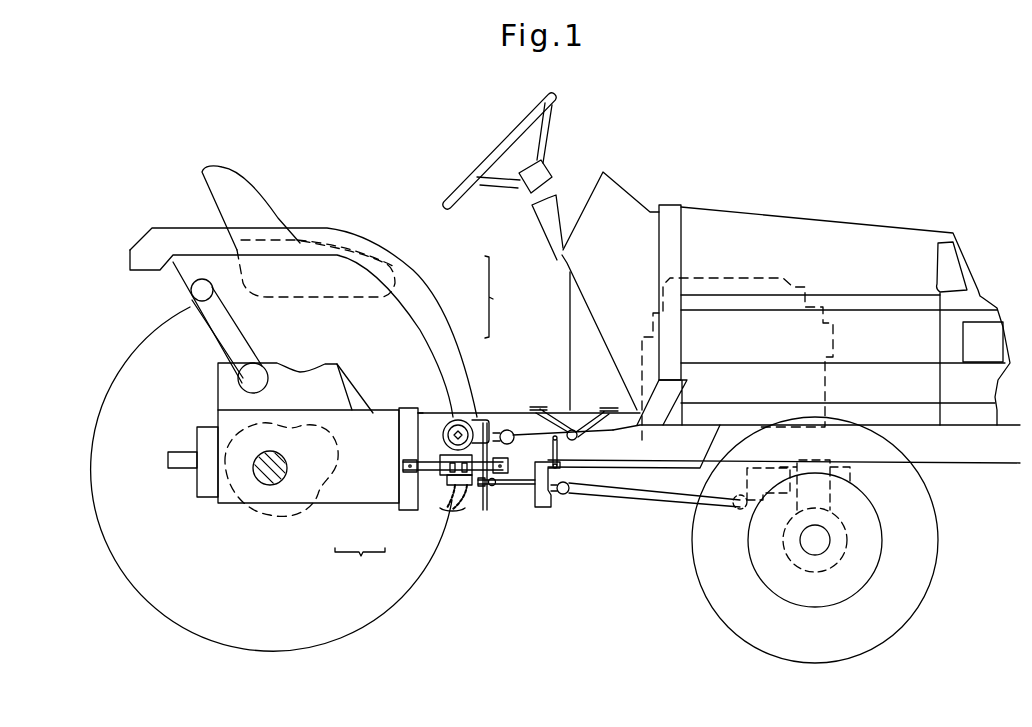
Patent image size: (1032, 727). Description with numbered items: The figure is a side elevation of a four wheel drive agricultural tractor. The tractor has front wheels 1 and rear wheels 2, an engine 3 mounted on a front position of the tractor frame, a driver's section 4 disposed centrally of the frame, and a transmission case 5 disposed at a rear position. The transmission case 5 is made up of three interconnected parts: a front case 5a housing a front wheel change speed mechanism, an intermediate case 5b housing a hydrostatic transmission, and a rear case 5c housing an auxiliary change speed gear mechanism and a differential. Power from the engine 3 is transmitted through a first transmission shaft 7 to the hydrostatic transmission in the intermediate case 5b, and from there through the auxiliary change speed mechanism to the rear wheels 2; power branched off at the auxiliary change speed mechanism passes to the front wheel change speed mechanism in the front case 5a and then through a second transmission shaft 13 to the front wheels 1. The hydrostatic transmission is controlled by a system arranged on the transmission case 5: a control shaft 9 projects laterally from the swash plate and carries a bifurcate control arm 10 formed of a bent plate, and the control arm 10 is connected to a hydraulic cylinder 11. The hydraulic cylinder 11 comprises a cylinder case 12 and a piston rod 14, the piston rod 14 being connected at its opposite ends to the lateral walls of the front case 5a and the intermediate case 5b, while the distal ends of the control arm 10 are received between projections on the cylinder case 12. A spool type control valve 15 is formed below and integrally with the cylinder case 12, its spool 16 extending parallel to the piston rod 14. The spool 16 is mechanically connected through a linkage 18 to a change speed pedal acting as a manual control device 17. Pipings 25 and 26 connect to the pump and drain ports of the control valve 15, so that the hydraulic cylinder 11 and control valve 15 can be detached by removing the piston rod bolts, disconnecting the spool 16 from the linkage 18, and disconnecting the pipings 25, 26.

The front wheels 1 is at (940, 564).
The rear wheels 2 is at (177, 612).
The engine 3 is at (792, 277).
The driver's section 4 is at (368, 192).
The transmission case 5 is at (496, 297).
The front case 5a is at (520, 430).
The intermediate case 5b is at (423, 413).
The rear case 5c is at (373, 413).
The first transmission shaft 7 is at (523, 410).
The control shaft 9 is at (455, 421).
The control arm 10 is at (400, 437).
The hydraulic cylinder 11 is at (360, 565).
The cylinder case 12 is at (437, 475).
The second transmission shaft 13 is at (648, 500).
The piston rod 14 is at (432, 468).
The control valve 15 is at (483, 513).
The spool 16 is at (488, 493).
The manual control device 17 is at (586, 412).
The linkage 18 is at (540, 492).
The piping 25 is at (462, 515).
The piping 26 is at (440, 513).